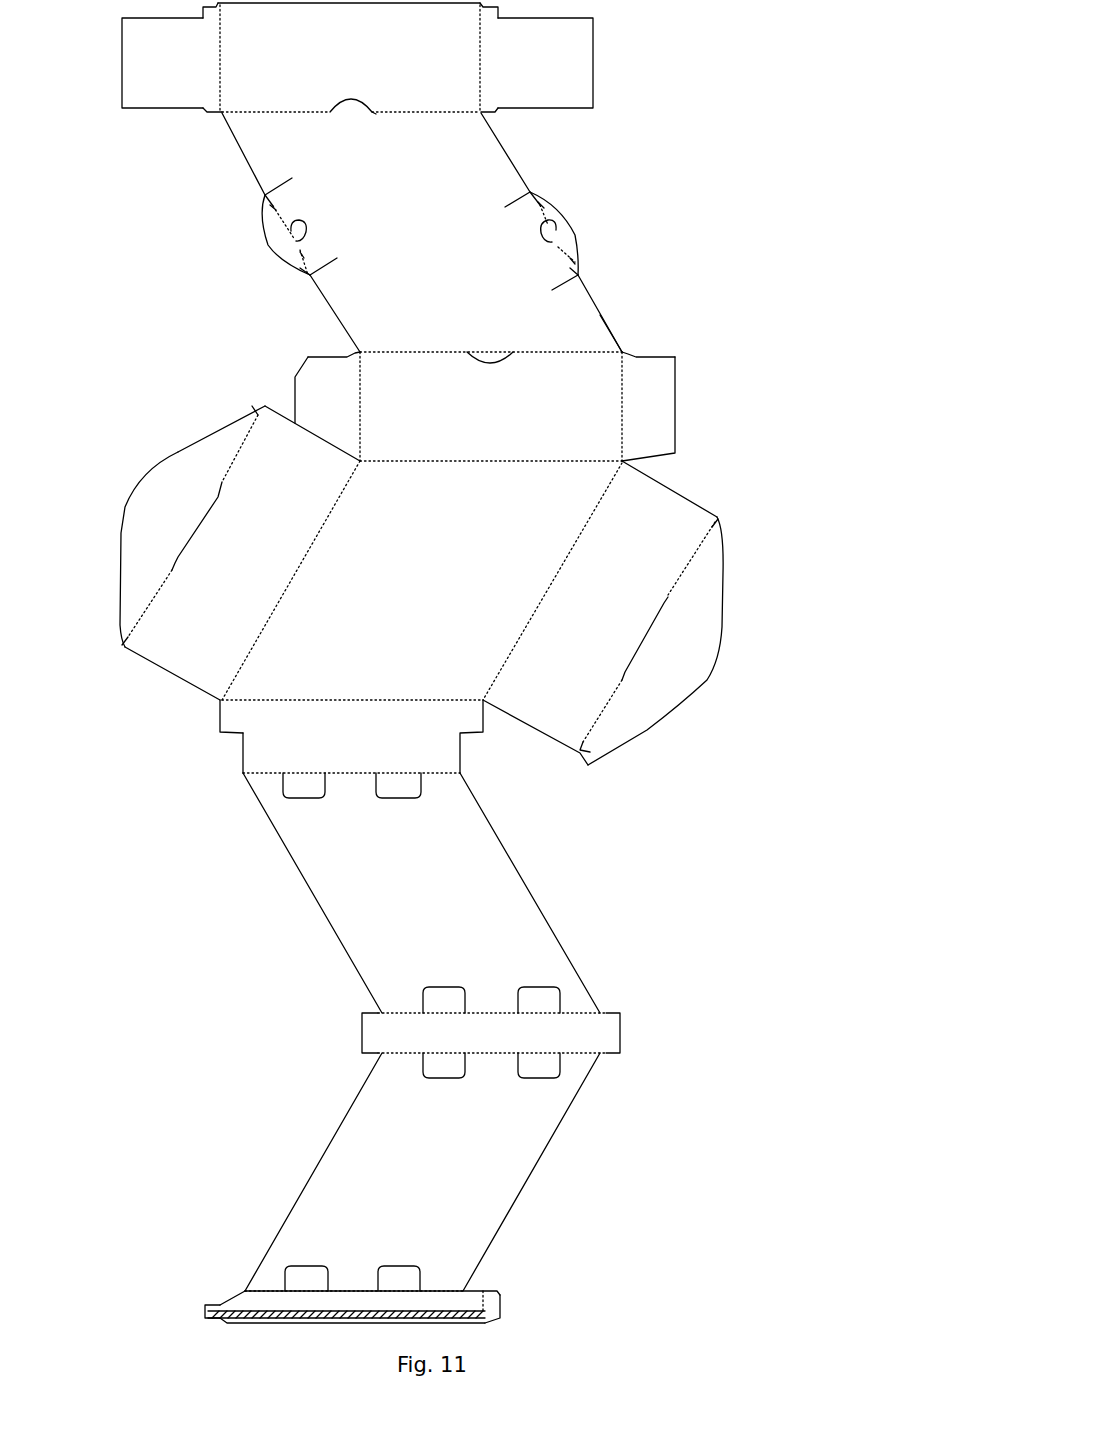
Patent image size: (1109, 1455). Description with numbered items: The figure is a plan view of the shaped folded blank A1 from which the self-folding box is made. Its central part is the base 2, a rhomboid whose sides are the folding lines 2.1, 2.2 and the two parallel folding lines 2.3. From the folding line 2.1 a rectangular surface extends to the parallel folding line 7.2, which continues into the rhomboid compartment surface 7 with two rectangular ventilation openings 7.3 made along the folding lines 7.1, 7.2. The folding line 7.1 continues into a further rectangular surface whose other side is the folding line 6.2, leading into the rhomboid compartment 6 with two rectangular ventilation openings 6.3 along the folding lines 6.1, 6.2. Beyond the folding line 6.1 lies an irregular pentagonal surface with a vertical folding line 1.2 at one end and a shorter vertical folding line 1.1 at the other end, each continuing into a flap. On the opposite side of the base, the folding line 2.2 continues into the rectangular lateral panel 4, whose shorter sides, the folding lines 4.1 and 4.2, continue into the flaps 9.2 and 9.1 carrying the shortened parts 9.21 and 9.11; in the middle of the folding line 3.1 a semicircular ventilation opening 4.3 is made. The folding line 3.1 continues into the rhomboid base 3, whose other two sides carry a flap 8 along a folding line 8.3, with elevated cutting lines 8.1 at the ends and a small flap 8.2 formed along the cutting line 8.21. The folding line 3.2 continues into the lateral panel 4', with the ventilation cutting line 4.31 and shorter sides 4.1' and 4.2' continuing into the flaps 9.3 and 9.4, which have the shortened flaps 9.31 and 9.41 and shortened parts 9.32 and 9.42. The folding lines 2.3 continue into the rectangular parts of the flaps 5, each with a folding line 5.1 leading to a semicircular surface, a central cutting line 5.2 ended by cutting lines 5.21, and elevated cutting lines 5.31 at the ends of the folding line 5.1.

The folded blank A1 is at (780, 132).
The lateral panel 4' is at (252, 23).
The shortened flap 9.41 is at (203, 8).
The flap 9.4 is at (170, 61).
The folding line 4.2' is at (122, 58).
The shortened part 9.42 is at (203, 113).
The shortened flap 9.31 is at (495, 10).
The flap 9.3 is at (545, 45).
The folding line 4.1' is at (607, 58).
The shortened part 9.32 is at (505, 112).
The cutting line 4.31 is at (398, 115).
The folding line 3.2 is at (233, 115).
The base 3 is at (397, 313).
The flap 8 is at (557, 224).
The elevated cutting lines 8.1 is at (306, 266).
The flap 8.2 is at (292, 226).
The cutting line 8.21 is at (295, 239).
The folding line 8.3 is at (275, 209).
The shortened part 9.11 is at (348, 352).
The flap 9.1 is at (323, 396).
The folding line 4.2 is at (193, 406).
The lateral panel 4 is at (535, 406).
The folding line 4.1 is at (674, 406).
The semicircular opening 4.3 is at (490, 358).
The folding line 3.1 is at (593, 350).
The shortened part 9.21 is at (635, 355).
The flap 9.2 is at (650, 434).
The folding line 2.2 is at (590, 460).
The flap 5 is at (222, 580).
The folding line 5.1 is at (240, 449).
The cutting line 5.2 is at (188, 529).
The cutting lines 5.21 is at (215, 490).
The elevated cutting lines 5.31 is at (253, 410).
The base 2 is at (402, 623).
The folding lines 2.3 is at (240, 667).
The folding line 2.1 is at (343, 702).
The folding line 7.2 is at (470, 778).
The compartment surface 7 is at (450, 857).
The folding line 7.1 is at (397, 1013).
The rectangular openings 7.3 is at (547, 1002).
The folding line 6.2 is at (400, 1053).
The compartment 6 is at (390, 1170).
The rectangular openings 6.3 is at (400, 1278).
The folding line 6.1 is at (263, 1290).
The folding line 1.1 is at (205, 1318).
The folding line 1.2 is at (490, 1306).